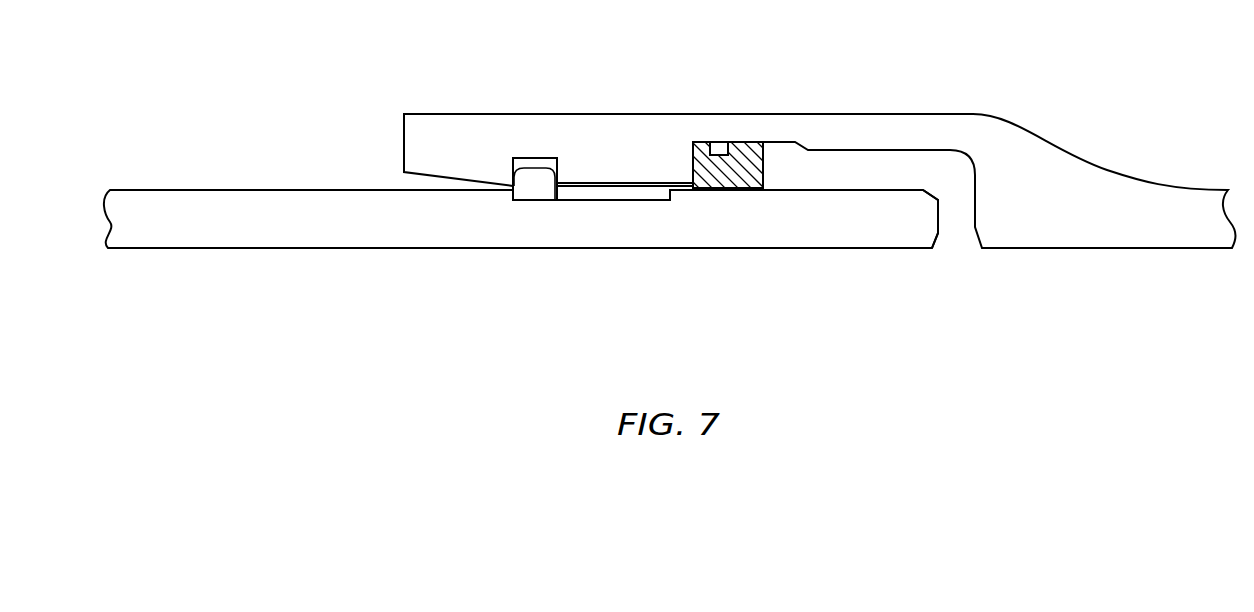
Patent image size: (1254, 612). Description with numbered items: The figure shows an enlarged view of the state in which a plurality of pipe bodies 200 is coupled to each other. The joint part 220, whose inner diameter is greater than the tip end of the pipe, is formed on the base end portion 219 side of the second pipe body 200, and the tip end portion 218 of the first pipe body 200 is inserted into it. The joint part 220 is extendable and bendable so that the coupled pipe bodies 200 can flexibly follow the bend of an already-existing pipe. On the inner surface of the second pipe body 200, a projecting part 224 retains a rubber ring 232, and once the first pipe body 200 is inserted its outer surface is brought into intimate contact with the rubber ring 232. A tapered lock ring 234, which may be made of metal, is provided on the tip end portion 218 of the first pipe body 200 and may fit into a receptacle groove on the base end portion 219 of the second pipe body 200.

The pipe body 200 is at (872, 113).
The tip end portion 218 is at (942, 238).
The base end portion 219 is at (403, 140).
The joint part 220 is at (670, 157).
The projecting part 224 is at (742, 137).
The rubber ring 232 is at (758, 180).
The lock ring 234 is at (537, 178).